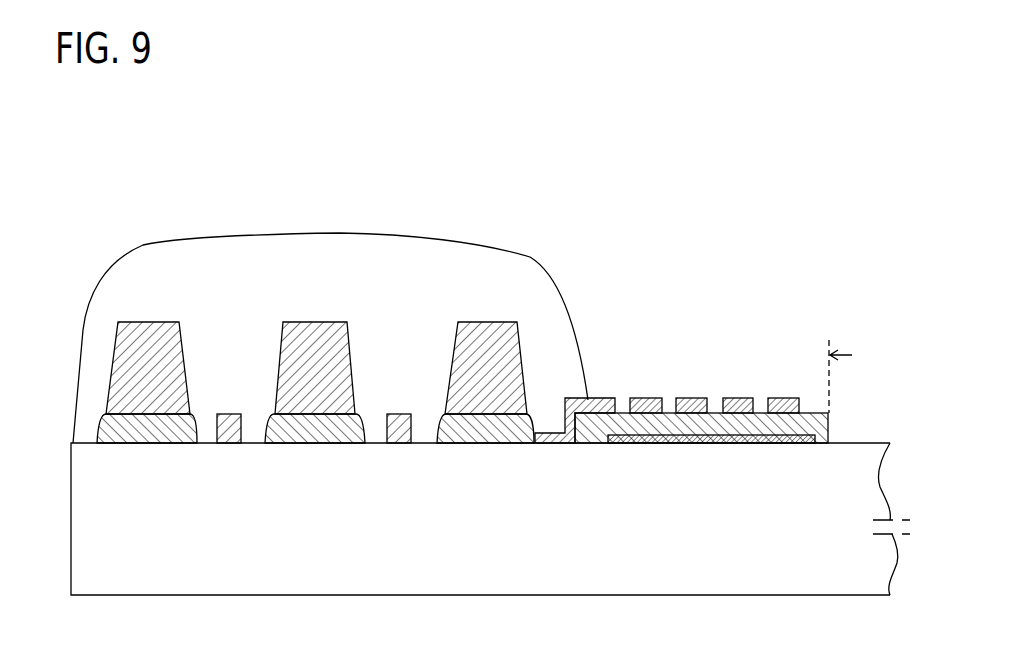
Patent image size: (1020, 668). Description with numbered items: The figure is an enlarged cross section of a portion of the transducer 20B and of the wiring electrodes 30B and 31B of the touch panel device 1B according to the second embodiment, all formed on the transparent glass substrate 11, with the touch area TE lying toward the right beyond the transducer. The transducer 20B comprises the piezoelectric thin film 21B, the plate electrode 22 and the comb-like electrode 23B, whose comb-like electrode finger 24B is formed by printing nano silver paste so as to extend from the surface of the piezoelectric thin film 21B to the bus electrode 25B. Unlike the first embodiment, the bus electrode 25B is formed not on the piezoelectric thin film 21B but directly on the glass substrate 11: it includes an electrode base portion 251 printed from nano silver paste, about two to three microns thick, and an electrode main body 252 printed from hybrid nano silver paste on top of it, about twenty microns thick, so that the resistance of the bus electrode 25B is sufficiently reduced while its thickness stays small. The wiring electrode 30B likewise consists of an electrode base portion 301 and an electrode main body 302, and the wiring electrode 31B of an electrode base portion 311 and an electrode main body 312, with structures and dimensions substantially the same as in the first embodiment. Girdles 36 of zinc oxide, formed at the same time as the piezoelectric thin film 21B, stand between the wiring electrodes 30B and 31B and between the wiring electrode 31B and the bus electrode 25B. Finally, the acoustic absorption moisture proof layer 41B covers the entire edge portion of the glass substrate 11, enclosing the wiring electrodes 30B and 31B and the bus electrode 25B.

The touch panel device 1B is at (461, 200).
The glass substrate 11 is at (313, 587).
The transducer 20B is at (750, 270).
The piezoelectric thin film 21B is at (683, 423).
The plate electrode 22 is at (769, 447).
The comb-like electrode 23B is at (778, 310).
The comb-like electrode finger 24B is at (693, 402).
The bus electrode 25B is at (518, 325).
The electrode base portion 251 is at (437, 430).
The electrode main body 252 is at (485, 328).
The wiring electrode 30B is at (308, 321).
The electrode base portion 301 is at (270, 430).
The electrode main body 302 is at (290, 330).
The wiring electrode 31B is at (147, 322).
The electrode base portion 311 is at (103, 432).
The electrode main body 312 is at (117, 348).
The girdle 36 is at (227, 413).
The acoustic absorption moisture proof layer 41B is at (548, 250).
The touch area TE is at (854, 367).